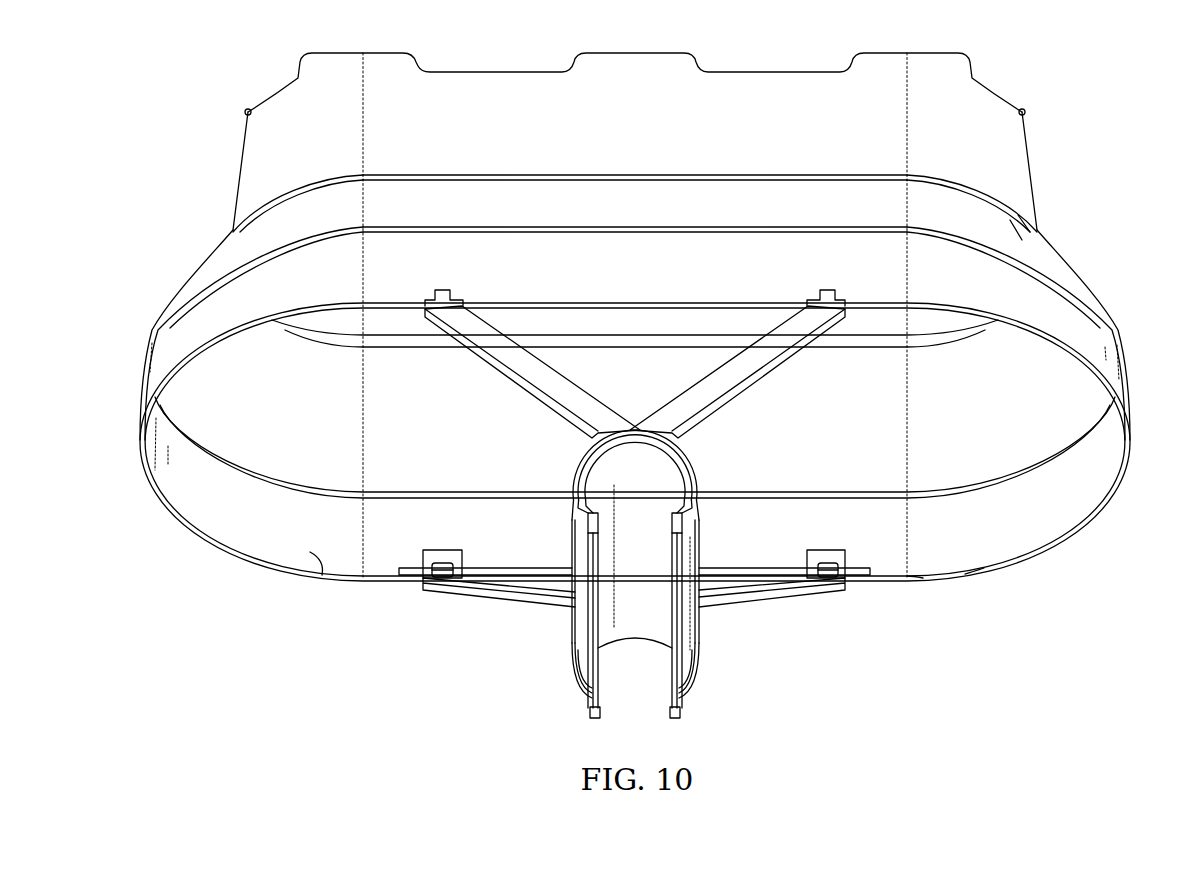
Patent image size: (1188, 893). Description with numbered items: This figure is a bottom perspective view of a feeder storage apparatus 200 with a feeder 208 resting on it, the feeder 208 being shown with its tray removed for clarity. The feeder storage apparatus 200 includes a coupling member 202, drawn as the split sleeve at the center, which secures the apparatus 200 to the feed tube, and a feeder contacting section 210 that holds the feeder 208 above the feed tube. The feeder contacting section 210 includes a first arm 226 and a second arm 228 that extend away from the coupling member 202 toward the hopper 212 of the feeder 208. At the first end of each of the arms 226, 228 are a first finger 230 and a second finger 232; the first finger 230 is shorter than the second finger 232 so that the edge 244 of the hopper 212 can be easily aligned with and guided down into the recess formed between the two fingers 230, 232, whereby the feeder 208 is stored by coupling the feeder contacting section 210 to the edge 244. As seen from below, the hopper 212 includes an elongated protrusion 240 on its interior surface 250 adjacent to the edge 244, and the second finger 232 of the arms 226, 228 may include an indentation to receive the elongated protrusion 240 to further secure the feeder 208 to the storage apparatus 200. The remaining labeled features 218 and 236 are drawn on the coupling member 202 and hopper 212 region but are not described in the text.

The feeder storage apparatus 200 is at (400, 663).
The coupling member 202 is at (572, 630).
The feeder 208 is at (1130, 165).
The feeder contacting section 210 is at (785, 612).
The hopper 212 is at (1035, 555).
The tube 218 is at (653, 712).
The first arm 226 is at (512, 377).
The second arm 228 is at (758, 377).
The first finger 230 is at (443, 290).
The second finger 232 is at (440, 550).
The rim flange 236 is at (923, 582).
The elongated protrusion 240 is at (730, 568).
The edge 244 is at (978, 575).
The interior surface 250 is at (322, 575).